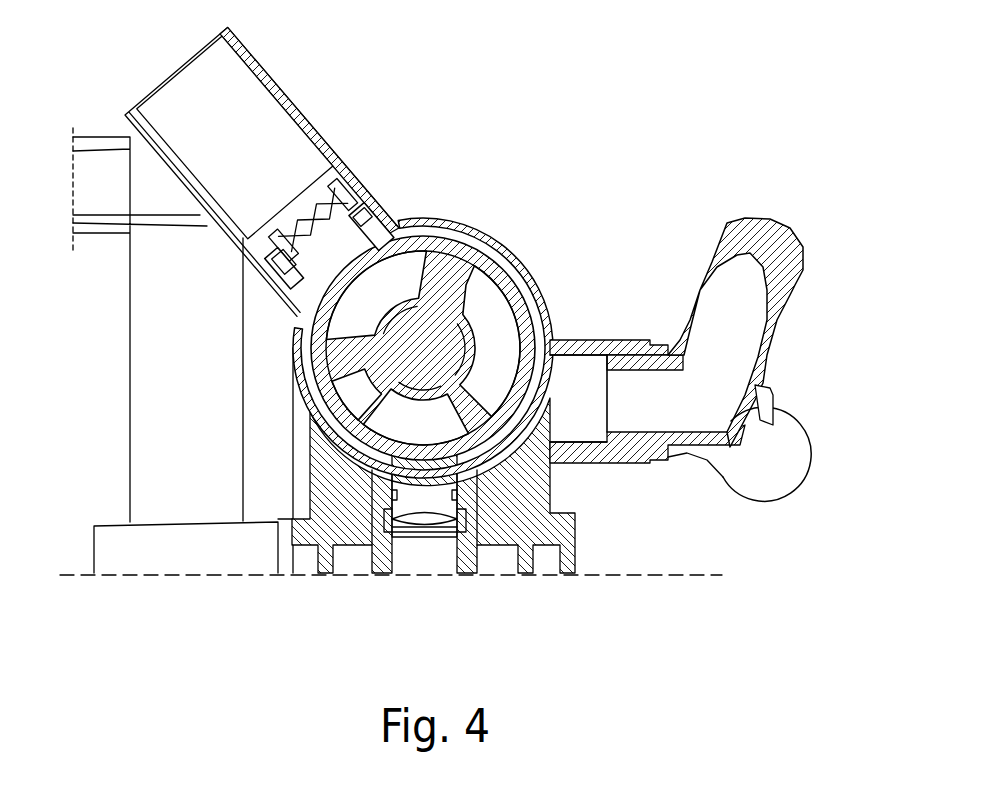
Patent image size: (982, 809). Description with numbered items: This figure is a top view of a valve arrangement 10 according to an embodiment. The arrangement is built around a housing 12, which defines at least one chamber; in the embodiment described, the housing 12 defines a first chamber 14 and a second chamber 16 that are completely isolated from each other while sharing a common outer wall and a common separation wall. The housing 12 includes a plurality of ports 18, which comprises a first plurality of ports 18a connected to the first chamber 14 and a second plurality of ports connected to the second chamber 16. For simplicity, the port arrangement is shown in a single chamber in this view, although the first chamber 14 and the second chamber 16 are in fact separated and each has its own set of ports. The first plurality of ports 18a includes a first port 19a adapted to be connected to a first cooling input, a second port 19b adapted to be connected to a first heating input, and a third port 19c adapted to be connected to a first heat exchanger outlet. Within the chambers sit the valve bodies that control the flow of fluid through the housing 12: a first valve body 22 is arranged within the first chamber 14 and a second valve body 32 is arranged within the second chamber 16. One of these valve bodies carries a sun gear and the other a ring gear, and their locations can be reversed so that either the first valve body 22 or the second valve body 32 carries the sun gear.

The valve housing 10 is at (508, 239).
The housing 12 is at (464, 297).
The first chamber 14 is at (430, 261).
The second chamber 16 is at (425, 277).
The plurality of ports 18 is at (647, 445).
The first plurality of ports 18a is at (592, 377).
The first port 19a is at (278, 182).
The second port 19b is at (424, 522).
The third port 19c is at (571, 430).
The first valve body 22 is at (486, 285).
The second valve body 32 is at (450, 276).